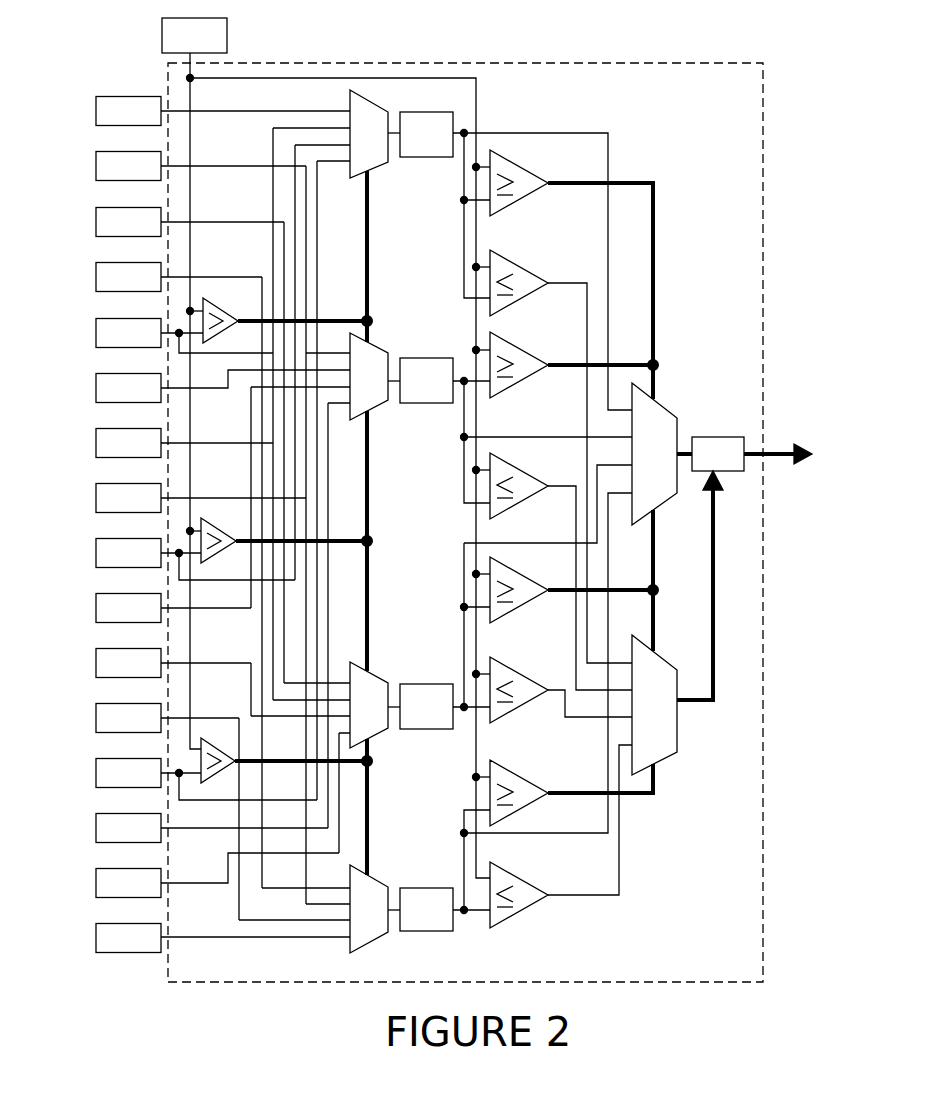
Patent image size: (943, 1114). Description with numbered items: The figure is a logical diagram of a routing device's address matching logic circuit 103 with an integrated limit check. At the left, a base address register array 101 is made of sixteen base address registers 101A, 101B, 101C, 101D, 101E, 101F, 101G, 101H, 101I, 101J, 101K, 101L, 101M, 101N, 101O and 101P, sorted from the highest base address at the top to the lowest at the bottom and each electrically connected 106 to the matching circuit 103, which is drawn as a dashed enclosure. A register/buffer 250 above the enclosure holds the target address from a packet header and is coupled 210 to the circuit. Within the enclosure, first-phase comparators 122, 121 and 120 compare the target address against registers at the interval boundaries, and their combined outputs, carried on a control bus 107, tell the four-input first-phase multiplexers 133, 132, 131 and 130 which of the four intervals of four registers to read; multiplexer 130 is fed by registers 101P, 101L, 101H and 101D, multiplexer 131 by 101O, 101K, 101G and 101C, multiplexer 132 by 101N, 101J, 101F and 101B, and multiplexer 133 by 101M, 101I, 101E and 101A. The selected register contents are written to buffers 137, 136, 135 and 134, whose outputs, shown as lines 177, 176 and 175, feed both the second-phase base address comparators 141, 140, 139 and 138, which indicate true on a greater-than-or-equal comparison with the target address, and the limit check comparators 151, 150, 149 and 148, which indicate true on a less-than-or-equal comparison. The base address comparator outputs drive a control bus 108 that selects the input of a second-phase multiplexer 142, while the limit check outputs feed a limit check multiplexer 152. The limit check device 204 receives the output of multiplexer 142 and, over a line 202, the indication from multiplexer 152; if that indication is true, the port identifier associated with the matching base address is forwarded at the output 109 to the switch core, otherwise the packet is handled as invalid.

The base address register array 101 is at (85, 965).
The base address register 101A is at (151, 120).
The base address register 101B is at (151, 175).
The base address register 101C is at (151, 231).
The base address register 101D is at (151, 286).
The base address register 101E is at (151, 342).
The base address register 101F is at (151, 397).
The base address register 101G is at (151, 452).
The base address register 101H is at (151, 507).
The base address register 101I is at (147, 562).
The base address register 101J is at (149, 617).
The base address register 101K is at (151, 672).
The base address register 101L is at (149, 727).
The base address register 101M is at (153, 782).
The base address register 101N is at (151, 837).
The base address register 101O is at (152, 892).
The base address register 101P is at (151, 947).
The address matching logic circuit 103 is at (728, 969).
The electrical connection 106 is at (285, 97).
The control bus 107 is at (368, 290).
The control bus 108 is at (650, 795).
The output 109 is at (790, 465).
The first-phase comparator 120 is at (208, 748).
The first-phase comparator 121 is at (206, 528).
The first-phase comparator 122 is at (207, 305).
The first-phase multiplexer 130 is at (352, 950).
The first-phase multiplexer 131 is at (366, 668).
The first-phase multiplexer 132 is at (375, 357).
The first-phase multiplexer 133 is at (353, 100).
The buffer 134 is at (443, 918).
The buffer 135 is at (443, 715).
The buffer 136 is at (443, 389).
The buffer 137 is at (443, 143).
The second-phase base address comparator 138 is at (512, 770).
The second-phase base address comparator 139 is at (495, 568).
The second-phase base address comparator 140 is at (523, 358).
The second-phase base address comparator 141 is at (505, 165).
The second-phase multiplexer 142 is at (670, 455).
The limit check comparator 148 is at (505, 875).
The limit check comparator 149 is at (495, 672).
The limit check comparator 150 is at (500, 470).
The limit check comparator 151 is at (527, 275).
The limit check multiplexer 152 is at (670, 707).
The register output line 175 is at (460, 735).
The register output line 176 is at (460, 415).
The register output line 177 is at (460, 166).
The port ID select line 202 is at (718, 648).
The limit check device 204 is at (734, 463).
The electrical coupling 210 is at (445, 78).
The register/buffer 250 is at (210, 51).